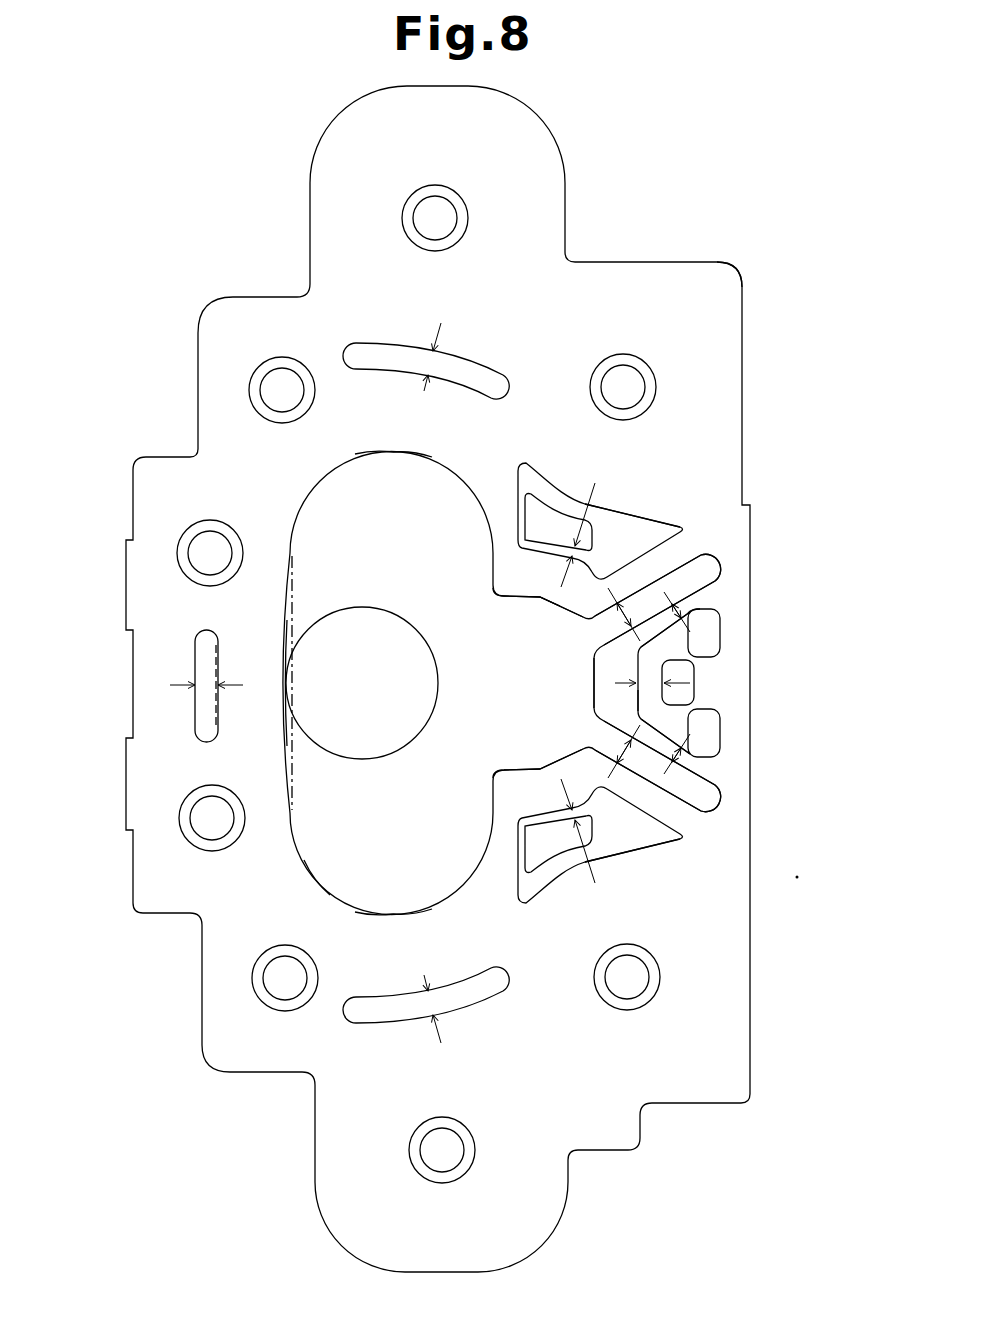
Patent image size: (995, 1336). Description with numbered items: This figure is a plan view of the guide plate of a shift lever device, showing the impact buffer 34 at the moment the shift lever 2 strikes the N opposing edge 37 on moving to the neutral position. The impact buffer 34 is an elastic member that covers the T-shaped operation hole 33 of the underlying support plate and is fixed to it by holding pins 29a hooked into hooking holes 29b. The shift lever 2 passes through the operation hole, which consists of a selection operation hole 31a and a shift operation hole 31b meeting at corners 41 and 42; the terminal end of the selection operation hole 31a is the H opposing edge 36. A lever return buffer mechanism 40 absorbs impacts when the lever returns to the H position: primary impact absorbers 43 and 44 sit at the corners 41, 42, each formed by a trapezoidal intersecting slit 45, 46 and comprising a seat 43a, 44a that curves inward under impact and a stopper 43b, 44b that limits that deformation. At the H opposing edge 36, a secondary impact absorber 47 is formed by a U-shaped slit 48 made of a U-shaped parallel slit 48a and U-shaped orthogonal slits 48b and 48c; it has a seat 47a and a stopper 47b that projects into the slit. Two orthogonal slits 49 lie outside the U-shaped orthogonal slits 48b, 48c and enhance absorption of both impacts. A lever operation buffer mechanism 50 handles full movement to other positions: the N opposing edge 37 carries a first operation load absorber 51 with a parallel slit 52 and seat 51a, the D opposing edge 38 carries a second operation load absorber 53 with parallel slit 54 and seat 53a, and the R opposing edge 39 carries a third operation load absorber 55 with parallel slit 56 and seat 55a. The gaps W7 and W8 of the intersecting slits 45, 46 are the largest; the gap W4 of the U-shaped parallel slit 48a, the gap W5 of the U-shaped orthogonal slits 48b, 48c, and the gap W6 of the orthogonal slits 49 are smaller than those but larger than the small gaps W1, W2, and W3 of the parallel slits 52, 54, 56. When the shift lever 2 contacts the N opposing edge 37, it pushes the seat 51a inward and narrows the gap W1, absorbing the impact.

The shift lever 2 is at (362, 607).
The holding pins 29a is at (462, 203).
The hooking holes 29b is at (435, 196).
The selection operation hole 31a is at (562, 606).
The shift operation hole 31b is at (320, 878).
The operation hole 33 is at (322, 486).
The impact buffer 34 is at (668, 262).
The H opposing edge 36 is at (598, 672).
The N opposing edge 37 is at (293, 625).
The D opposing edge 38 is at (372, 453).
The R opposing edge 39 is at (380, 912).
The lever return buffer mechanism 40 is at (797, 480).
The corner 41 is at (502, 597).
The corner 42 is at (502, 770).
The primary impact absorber 43 is at (678, 460).
The seat 43a is at (548, 604).
The stopper 43b is at (606, 538).
The primary impact absorber 44 is at (668, 895).
The seat 44a is at (548, 764).
The stopper 44b is at (606, 828).
The intersecting slit 45 is at (530, 475).
The intersecting slit 46 is at (533, 894).
The secondary impact absorber 47 is at (820, 615).
The seat 47a is at (594, 690).
The stopper 47b is at (708, 650).
The U-shaped slit 48 is at (708, 733).
The U-shaped parallel slit 48a is at (638, 703).
The U-shaped orthogonal slit 48b is at (706, 614).
The U-shaped orthogonal slit 48c is at (706, 753).
The orthogonal slits 49 is at (705, 560).
The lever operation buffer mechanism 50 is at (226, 236).
The first operation load absorber 51 is at (102, 592).
The seat 51a is at (293, 683).
The parallel slit 52 is at (207, 630).
The second operation load absorber 53 is at (478, 296).
The seat 53a is at (407, 453).
The parallel slit 54 is at (497, 382).
The third operation load absorber 55 is at (493, 1078).
The seat 55a is at (428, 912).
The parallel slit 56 is at (497, 983).
The gap W1 is at (198, 685).
The gap W2 is at (450, 370).
The gap W3 is at (450, 1012).
The gap W4 is at (645, 667).
The gap W5 is at (708, 618).
The gap W6 is at (607, 618).
The gap W7 is at (580, 510).
The gap W8 is at (580, 858).